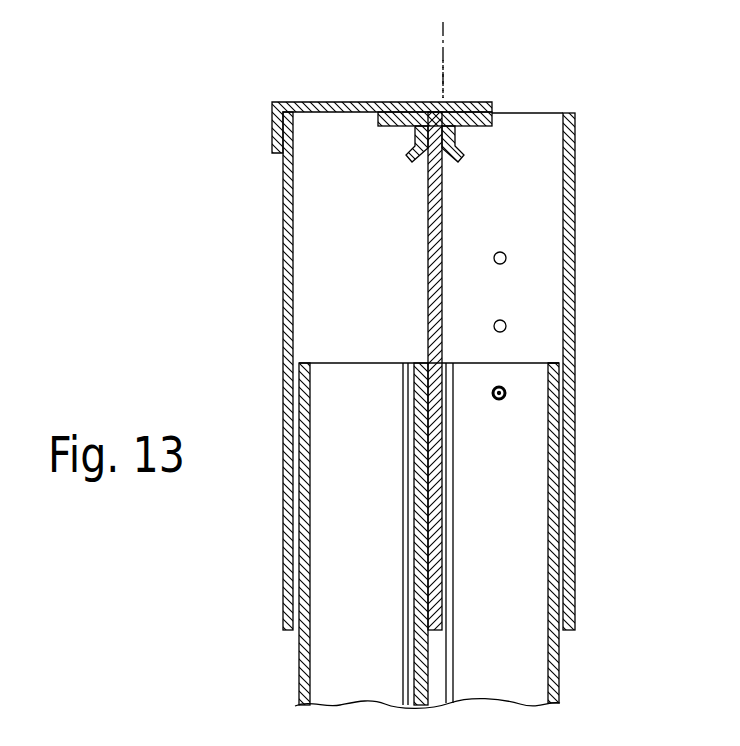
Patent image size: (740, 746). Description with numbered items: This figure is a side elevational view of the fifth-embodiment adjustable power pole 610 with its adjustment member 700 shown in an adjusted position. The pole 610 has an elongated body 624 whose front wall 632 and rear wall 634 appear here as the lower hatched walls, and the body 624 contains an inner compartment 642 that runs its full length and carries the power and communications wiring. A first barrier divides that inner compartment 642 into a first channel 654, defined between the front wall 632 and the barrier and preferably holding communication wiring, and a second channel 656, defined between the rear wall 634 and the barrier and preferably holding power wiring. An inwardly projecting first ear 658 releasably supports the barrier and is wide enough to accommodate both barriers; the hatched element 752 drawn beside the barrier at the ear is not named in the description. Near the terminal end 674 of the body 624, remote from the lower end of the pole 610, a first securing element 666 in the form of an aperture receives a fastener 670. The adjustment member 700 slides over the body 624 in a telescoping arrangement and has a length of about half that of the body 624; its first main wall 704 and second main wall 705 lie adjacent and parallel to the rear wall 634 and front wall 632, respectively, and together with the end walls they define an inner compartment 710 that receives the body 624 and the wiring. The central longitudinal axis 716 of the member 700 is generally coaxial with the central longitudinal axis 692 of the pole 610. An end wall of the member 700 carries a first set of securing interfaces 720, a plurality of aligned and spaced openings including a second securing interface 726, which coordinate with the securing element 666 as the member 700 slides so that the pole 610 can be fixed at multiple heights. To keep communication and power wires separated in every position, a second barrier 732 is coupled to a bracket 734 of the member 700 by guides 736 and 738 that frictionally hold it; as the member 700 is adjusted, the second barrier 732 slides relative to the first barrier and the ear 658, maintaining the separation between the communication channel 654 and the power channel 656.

The adjustable power pole 610 is at (620, 150).
The elongated body 624 is at (560, 446).
The front wall 632 is at (552, 397).
The rear wall 634 is at (305, 398).
The inner compartment 642 is at (522, 673).
The first channel 654 is at (545, 540).
The second channel 656 is at (308, 523).
The first ear 658 is at (405, 660).
The first securing element 666 is at (497, 401).
The fastener 670 is at (505, 400).
The terminal end 674 is at (557, 366).
The central longitudinal axis 692 is at (443, 60).
The adjustment member 700 is at (275, 247).
The first main wall 704 is at (290, 290).
The second main wall 705 is at (576, 226).
The inner compartment 710 is at (550, 143).
The central longitudinal axis 716 is at (443, 36).
The first set of securing interfaces 720 is at (525, 318).
The second securing interface 726 is at (507, 328).
The second barrier 732 is at (443, 228).
The bracket 734 is at (350, 101).
The guide 736 is at (460, 150).
The guide 738 is at (412, 151).
The sleeve 752 is at (420, 365).